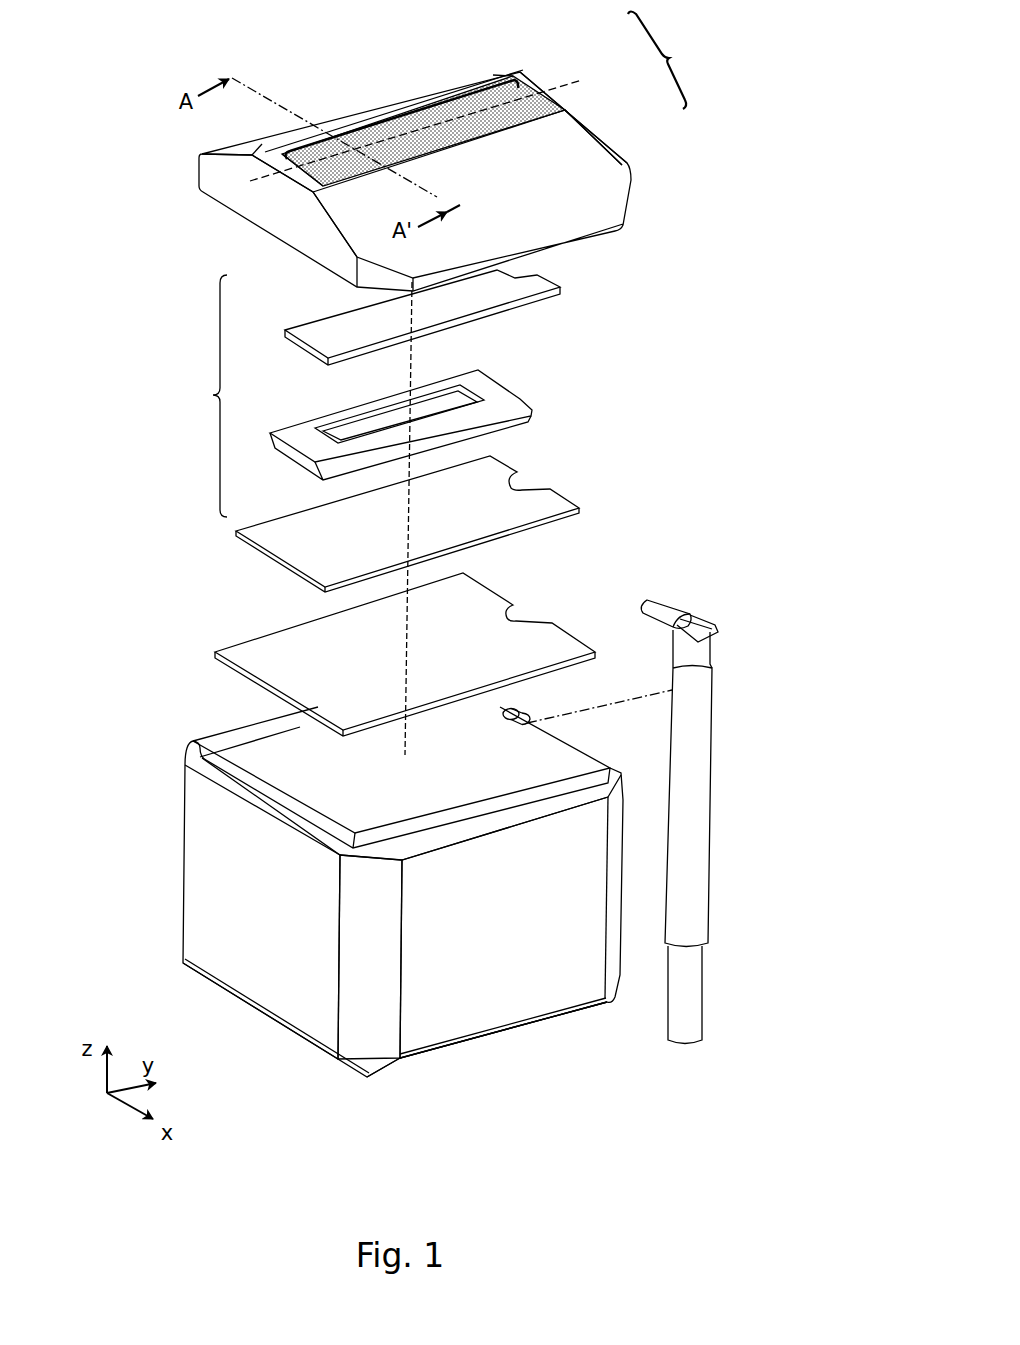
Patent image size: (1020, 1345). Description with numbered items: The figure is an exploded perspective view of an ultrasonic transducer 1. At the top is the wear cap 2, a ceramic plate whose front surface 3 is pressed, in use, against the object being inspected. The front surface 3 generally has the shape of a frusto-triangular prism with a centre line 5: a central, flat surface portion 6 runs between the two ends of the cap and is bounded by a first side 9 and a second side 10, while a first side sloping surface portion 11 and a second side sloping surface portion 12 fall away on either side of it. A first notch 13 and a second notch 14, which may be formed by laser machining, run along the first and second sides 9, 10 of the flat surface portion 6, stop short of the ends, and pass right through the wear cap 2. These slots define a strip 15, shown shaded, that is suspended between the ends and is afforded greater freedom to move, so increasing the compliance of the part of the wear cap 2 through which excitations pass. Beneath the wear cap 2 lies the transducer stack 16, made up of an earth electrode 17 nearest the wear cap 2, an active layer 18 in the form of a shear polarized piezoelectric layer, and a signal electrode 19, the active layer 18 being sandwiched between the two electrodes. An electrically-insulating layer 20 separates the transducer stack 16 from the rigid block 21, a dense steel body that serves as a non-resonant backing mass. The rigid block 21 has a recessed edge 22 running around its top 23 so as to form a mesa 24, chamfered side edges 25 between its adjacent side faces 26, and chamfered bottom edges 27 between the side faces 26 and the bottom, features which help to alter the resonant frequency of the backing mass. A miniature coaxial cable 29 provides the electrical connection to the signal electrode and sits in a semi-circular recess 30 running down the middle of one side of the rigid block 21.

The ultrasonic transducer 1 is at (726, 442).
The wear cap 2 is at (605, 232).
The front surface 3 is at (661, 61).
The centre line 5 is at (251, 182).
The central flat surface portion 6 is at (216, 180).
The first side 9 is at (262, 144).
The second side 10 is at (324, 188).
The first side sloping surface portion 11 is at (495, 73).
The second side sloping surface portion 12 is at (594, 135).
The first notch 13 is at (365, 116).
The second notch 14 is at (457, 140).
The strip 15 is at (399, 116).
The transducer stack 16 is at (204, 396).
The earth electrode 17 is at (308, 324).
The active layer 18 is at (295, 431).
The signal electrode 19 is at (290, 526).
The electrically-insulating layer 20 is at (246, 653).
The rigid block 21 is at (198, 964).
The recessed edge 22 is at (242, 726).
The top 23 is at (283, 730).
The mesa 24 is at (219, 751).
The chamfered side edges 25 is at (372, 971).
The side faces 26 is at (204, 836).
The chamfered bottom edges 27 is at (515, 1034).
The miniature coaxial cable 29 is at (709, 812).
The semi-circular recess 30 is at (549, 709).